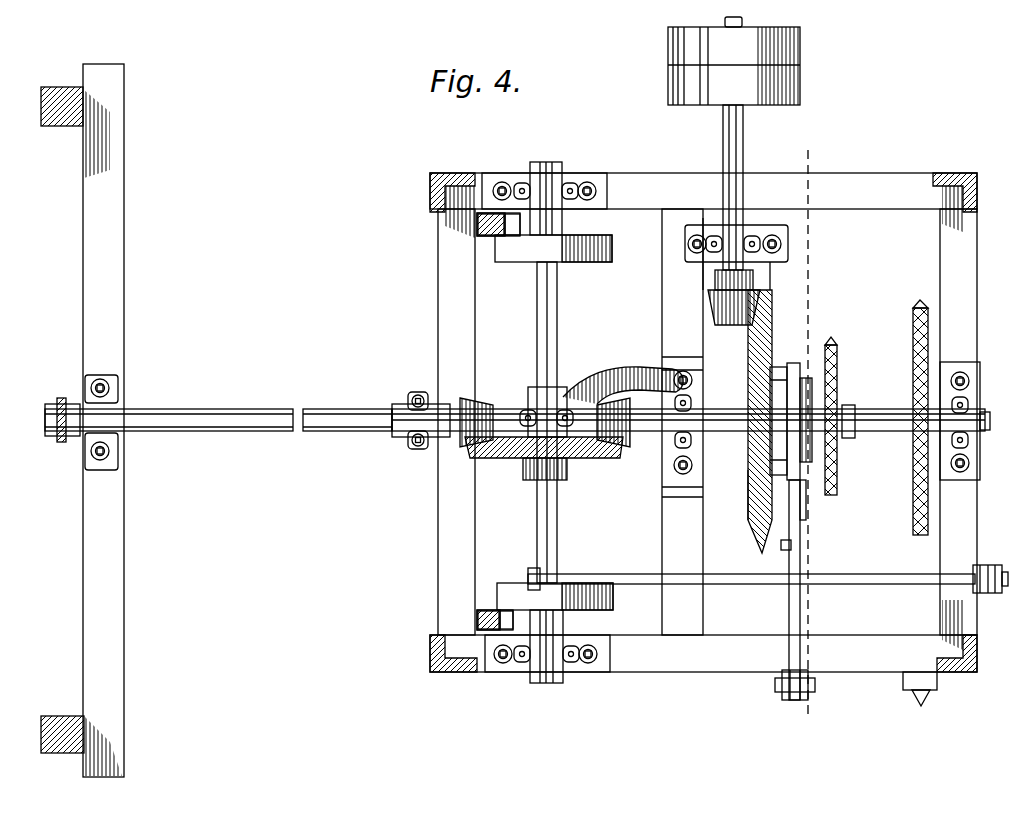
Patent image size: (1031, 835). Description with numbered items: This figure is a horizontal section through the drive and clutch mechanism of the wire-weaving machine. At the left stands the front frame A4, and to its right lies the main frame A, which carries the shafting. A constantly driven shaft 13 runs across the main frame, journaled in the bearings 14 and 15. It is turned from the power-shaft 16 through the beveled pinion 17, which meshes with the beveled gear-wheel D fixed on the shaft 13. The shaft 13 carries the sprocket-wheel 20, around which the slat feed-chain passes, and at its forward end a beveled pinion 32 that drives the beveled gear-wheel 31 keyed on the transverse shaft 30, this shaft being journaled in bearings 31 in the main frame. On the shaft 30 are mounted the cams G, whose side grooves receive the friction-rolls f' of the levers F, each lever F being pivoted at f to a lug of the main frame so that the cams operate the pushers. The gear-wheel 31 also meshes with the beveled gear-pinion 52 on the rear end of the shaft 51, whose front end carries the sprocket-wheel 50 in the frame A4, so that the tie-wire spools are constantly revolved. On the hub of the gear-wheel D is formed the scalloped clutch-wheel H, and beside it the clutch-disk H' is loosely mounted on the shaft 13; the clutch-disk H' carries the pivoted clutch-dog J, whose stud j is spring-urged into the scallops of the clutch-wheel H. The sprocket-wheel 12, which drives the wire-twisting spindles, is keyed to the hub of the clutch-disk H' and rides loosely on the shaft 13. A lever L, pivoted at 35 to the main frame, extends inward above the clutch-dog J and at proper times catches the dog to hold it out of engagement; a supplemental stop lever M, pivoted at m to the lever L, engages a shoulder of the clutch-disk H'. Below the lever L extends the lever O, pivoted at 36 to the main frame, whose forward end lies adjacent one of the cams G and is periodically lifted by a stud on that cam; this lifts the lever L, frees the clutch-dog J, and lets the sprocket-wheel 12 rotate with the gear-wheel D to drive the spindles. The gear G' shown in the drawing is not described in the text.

The frame A4 is at (99, 420).
The main frame A is at (440, 512).
The sprocket-wheel 50 is at (62, 443).
The shaft 51 is at (241, 432).
The beveled gear-pinion 52 is at (478, 400).
The beveled gear-wheel 31 is at (557, 168).
The transverse shaft 30 is at (558, 520).
The beveled pinion 32 is at (617, 372).
The lever F is at (477, 226).
The pivot f is at (491, 421).
The friction-roll f' is at (510, 421).
The cam G is at (553, 268).
The gear G' is at (571, 602).
The bearing 14 is at (704, 448).
The power-shaft 16 is at (744, 140).
The beveled pinion 17 is at (732, 325).
The sprocket-wheel 12 is at (840, 362).
The shaft 13 is at (886, 432).
The bearing 15 is at (979, 460).
The sprocket-wheel 20 is at (918, 533).
The beveled gear-wheel D is at (772, 338).
The clutch-wheel H is at (732, 495).
The clutch-disk H' is at (838, 413).
The clutch-dog J is at (798, 366).
The stud j is at (779, 370).
The lever L is at (789, 610).
The supplemental stop lever M is at (806, 512).
The pivot m is at (781, 548).
The lever O is at (876, 585).
The pivot 35 is at (780, 690).
The pivot 36 is at (990, 565).